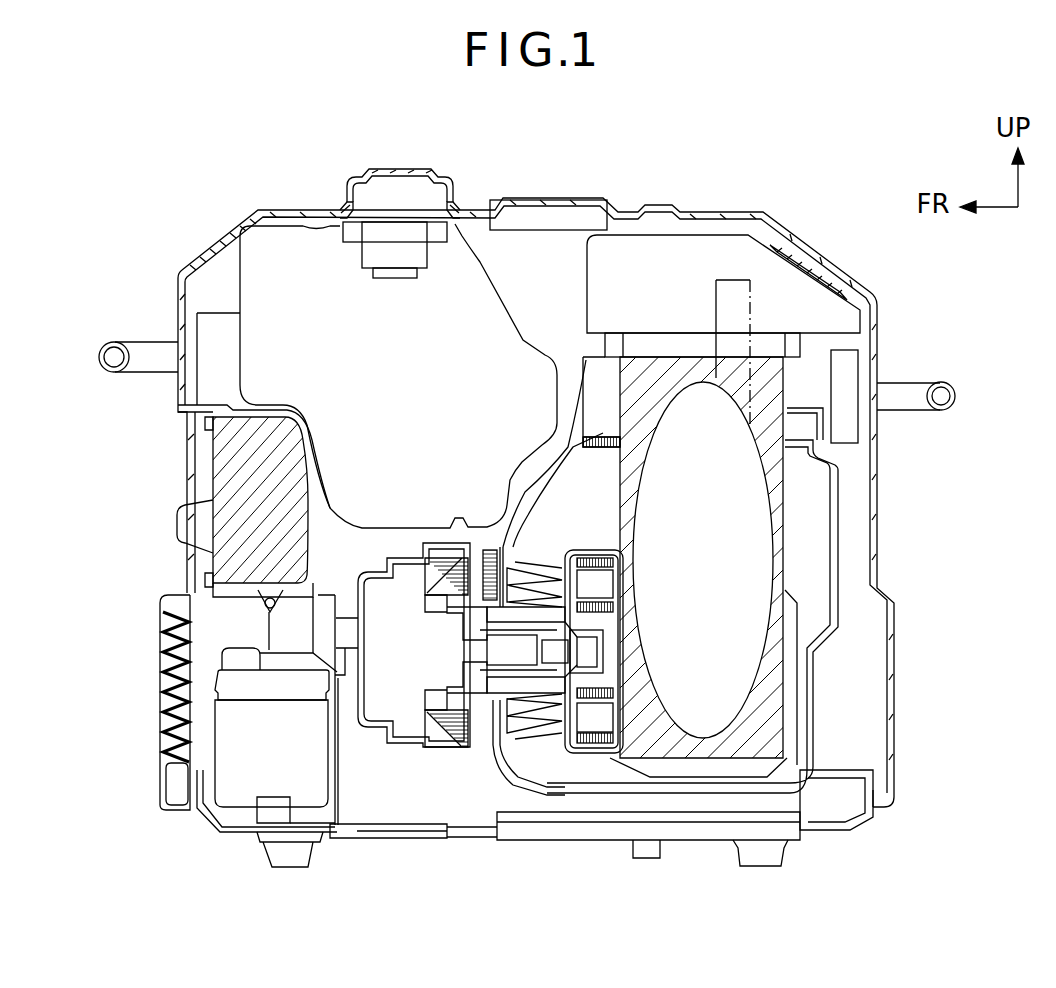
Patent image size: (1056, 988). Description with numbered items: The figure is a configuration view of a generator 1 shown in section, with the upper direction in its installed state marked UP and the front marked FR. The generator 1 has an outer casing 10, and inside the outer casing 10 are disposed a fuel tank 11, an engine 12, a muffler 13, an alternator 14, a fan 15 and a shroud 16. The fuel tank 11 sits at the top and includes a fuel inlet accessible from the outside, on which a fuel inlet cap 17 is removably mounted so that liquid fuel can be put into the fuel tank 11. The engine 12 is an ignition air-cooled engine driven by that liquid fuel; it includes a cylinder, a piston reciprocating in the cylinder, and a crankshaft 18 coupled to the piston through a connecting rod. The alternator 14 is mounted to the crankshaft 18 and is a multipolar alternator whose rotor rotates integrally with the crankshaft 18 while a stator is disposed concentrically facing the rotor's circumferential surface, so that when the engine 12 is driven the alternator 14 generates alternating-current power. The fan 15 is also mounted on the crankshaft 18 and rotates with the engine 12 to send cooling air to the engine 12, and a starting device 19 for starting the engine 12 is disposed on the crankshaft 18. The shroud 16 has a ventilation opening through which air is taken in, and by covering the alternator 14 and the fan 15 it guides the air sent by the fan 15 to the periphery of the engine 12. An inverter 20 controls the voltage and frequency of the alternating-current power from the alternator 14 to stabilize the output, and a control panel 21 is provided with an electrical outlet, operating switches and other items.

The generator 1 is at (818, 200).
The outer casing 10 is at (734, 212).
The fuel tank 11 is at (477, 250).
The engine 12 is at (785, 506).
The muffler 13 is at (743, 590).
The alternator 14 is at (589, 753).
The fan 15 is at (517, 785).
The shroud 16 is at (603, 762).
The fuel inlet cap 17 is at (437, 173).
The crankshaft 18 is at (568, 745).
The starting device 19 is at (414, 748).
The inverter 20 is at (213, 747).
The control panel 21 is at (212, 488).